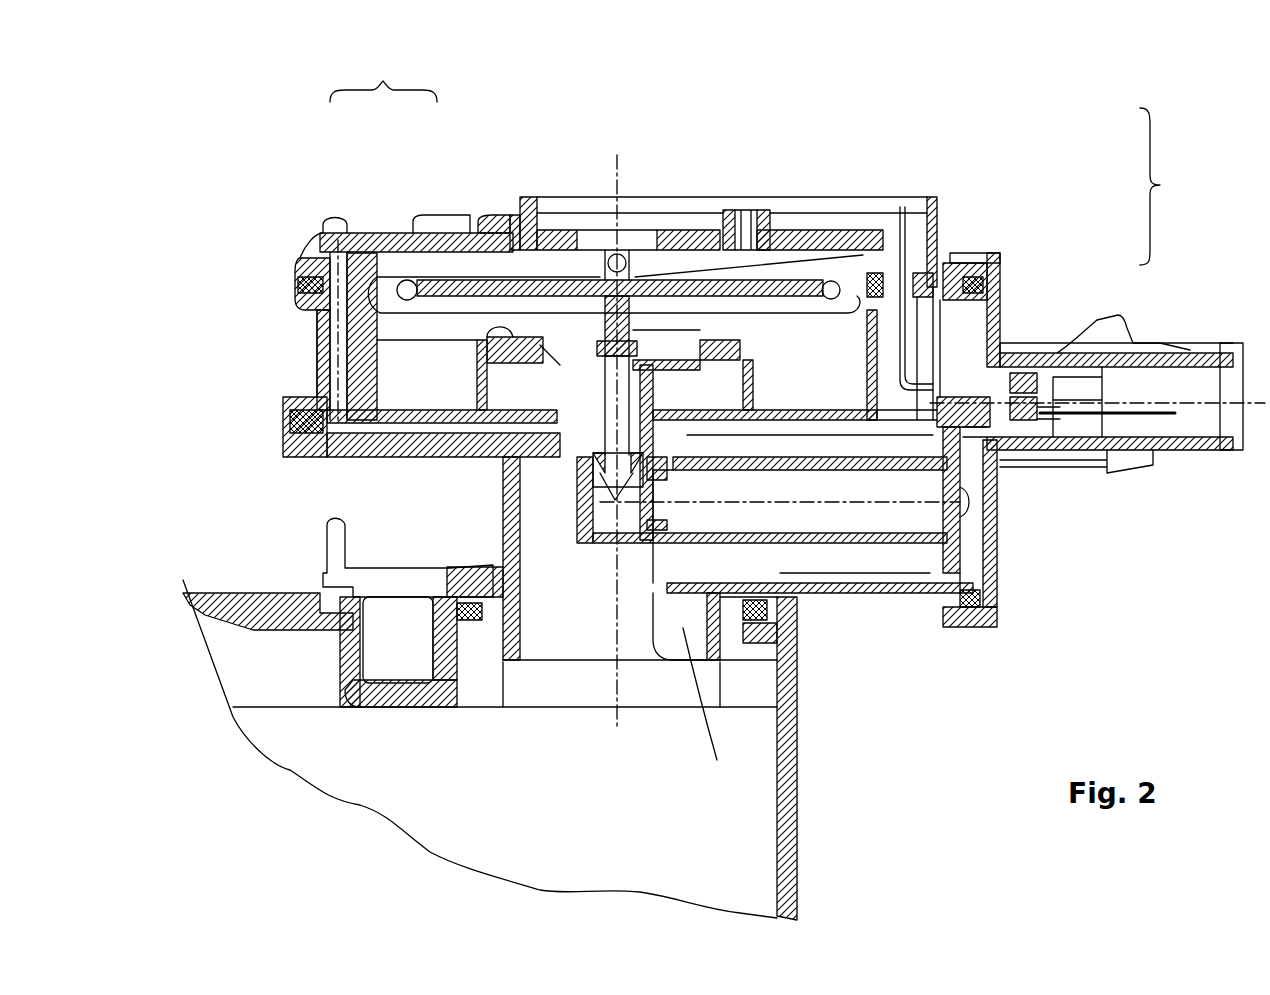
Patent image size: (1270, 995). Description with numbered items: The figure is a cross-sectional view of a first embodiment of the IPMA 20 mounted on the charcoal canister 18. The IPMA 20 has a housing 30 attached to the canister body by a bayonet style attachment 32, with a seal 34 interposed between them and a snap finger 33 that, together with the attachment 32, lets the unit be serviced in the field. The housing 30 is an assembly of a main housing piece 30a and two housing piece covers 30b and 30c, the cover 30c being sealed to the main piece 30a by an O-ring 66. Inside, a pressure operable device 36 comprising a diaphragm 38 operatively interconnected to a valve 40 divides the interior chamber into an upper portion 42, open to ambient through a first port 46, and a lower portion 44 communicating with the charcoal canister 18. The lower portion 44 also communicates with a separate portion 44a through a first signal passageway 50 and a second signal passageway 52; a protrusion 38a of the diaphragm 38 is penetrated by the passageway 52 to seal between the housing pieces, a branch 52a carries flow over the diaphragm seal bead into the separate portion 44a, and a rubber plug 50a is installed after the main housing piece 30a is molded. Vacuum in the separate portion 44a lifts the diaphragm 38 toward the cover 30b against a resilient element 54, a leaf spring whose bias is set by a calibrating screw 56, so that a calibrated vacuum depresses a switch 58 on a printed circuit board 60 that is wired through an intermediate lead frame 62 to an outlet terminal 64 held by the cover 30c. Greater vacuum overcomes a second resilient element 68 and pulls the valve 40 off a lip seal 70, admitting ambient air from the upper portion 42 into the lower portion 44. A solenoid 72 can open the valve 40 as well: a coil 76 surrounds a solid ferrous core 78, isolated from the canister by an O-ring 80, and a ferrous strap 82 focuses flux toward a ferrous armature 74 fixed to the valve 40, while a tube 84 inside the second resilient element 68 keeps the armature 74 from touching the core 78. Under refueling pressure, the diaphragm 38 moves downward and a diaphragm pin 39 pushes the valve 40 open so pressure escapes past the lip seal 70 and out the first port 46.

The charcoal canister 18 is at (797, 840).
The IPMA 20 is at (268, 213).
The housing 30 is at (870, 324).
The main housing piece 30a is at (965, 290).
The housing piece cover 30b is at (945, 213).
The housing piece cover 30c is at (1000, 262).
The bayonet style attachment 32 is at (440, 678).
The snap finger 33 is at (345, 530).
The seal 34 is at (797, 663).
The pressure operable device 36 is at (420, 353).
The diaphragm 38 is at (420, 235).
The protrusion 38a is at (310, 282).
The diaphragm pin 39 is at (524, 205).
The valve 40 is at (490, 235).
The upper portion 42 is at (840, 388).
The lower portion 44 is at (558, 630).
The separate portion 44a is at (527, 262).
The first port 46 is at (1137, 472).
The first signal passageway 50 is at (335, 455).
The rubber plug 50a is at (290, 425).
The second signal passageway 52 is at (330, 350).
The branch 52a is at (345, 230).
The resilient element 54 is at (668, 240).
The calibrating screw 56 is at (792, 262).
The switch 58 is at (628, 252).
The printed circuit board 60 is at (752, 215).
The intermediate lead frame 62 is at (938, 235).
The outlet terminal 64 is at (1175, 415).
The O-ring 66 is at (973, 627).
The second resilient element 68 is at (565, 430).
The lip seal 70 is at (505, 418).
The solenoid 72 is at (978, 555).
The ferrous armature 74 is at (590, 545).
The coil 76 is at (845, 550).
The solid ferrous core 78 is at (907, 513).
The O-ring 80 is at (683, 628).
The ferrous strap 82 is at (957, 480).
The tube 84 is at (623, 445).